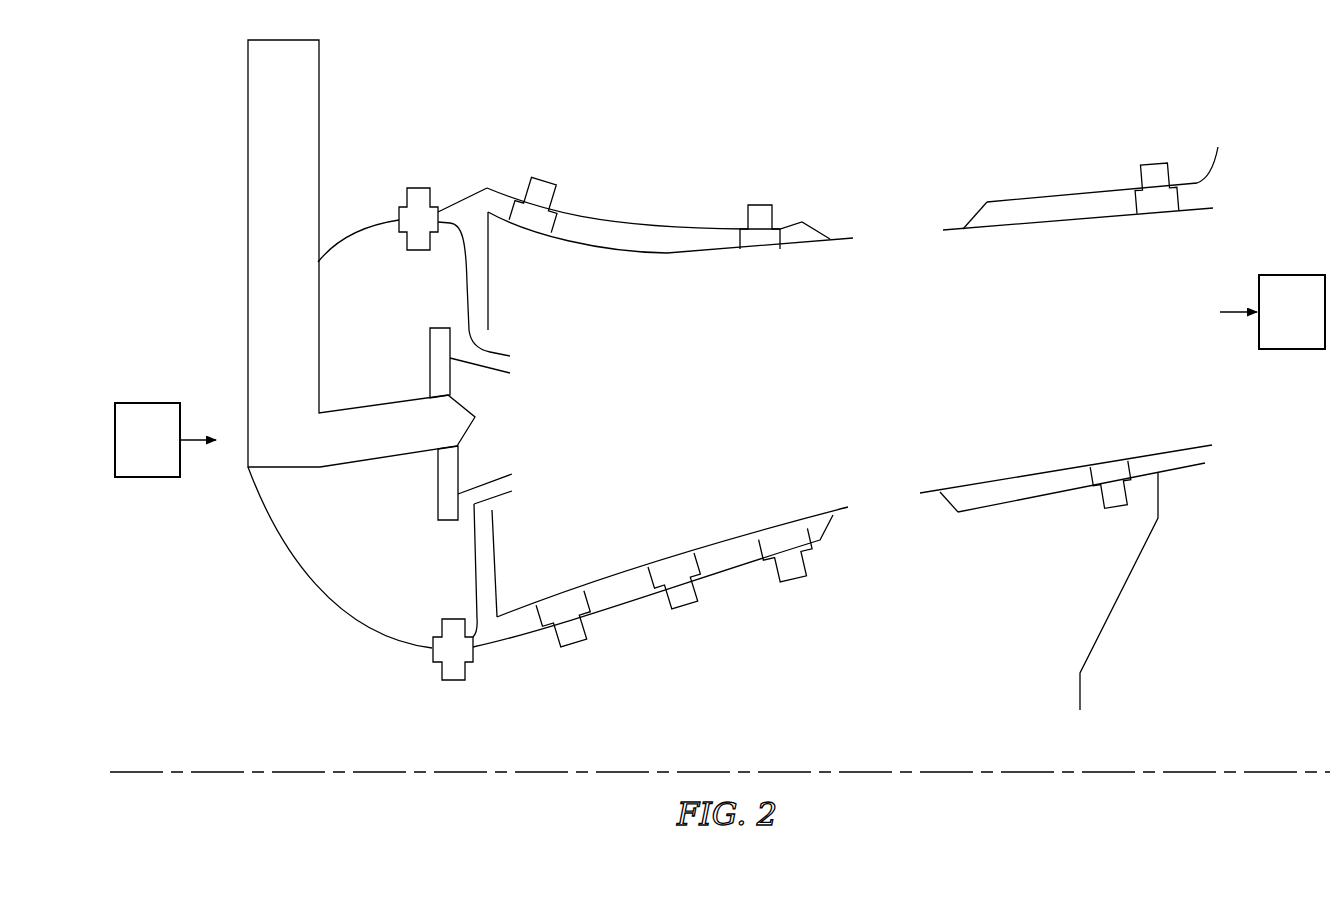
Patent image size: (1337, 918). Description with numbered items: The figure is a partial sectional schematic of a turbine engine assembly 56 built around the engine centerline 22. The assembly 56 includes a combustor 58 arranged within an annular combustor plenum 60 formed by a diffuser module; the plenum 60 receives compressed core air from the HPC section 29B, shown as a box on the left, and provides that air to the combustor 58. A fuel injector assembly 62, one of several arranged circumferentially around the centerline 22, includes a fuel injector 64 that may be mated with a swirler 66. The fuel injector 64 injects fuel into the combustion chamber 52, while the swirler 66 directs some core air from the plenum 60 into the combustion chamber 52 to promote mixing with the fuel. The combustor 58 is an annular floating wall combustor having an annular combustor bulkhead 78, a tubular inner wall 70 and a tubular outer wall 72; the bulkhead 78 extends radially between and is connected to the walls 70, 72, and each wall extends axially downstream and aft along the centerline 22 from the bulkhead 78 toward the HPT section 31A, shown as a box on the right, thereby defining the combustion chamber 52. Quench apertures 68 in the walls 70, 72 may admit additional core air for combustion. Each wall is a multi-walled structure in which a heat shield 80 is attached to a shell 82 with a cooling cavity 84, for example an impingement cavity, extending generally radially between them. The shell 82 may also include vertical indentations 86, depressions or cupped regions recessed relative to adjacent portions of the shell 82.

The centerline 22 is at (1197, 768).
The HPC section 29B is at (170, 455).
The HPT section 31A is at (1270, 327).
The combustion chamber 52 is at (746, 399).
The turbine engine assembly 56 is at (1018, 102).
The combustor 58 is at (657, 202).
The combustor plenum 60 is at (749, 107).
The fuel injector assembly 62 is at (365, 490).
The fuel injector 64 is at (375, 398).
The swirler 66 is at (513, 362).
The quench aperture 68 is at (900, 227).
The combustor inner wall 70 is at (638, 622).
The combustor outer wall 72 is at (698, 225).
The combustor bulkhead 78 is at (463, 573).
The heat shield 80 is at (708, 253).
The shell 82 is at (1045, 197).
The cooling cavity 84 is at (620, 233).
The vertical indentation 86 is at (837, 215).